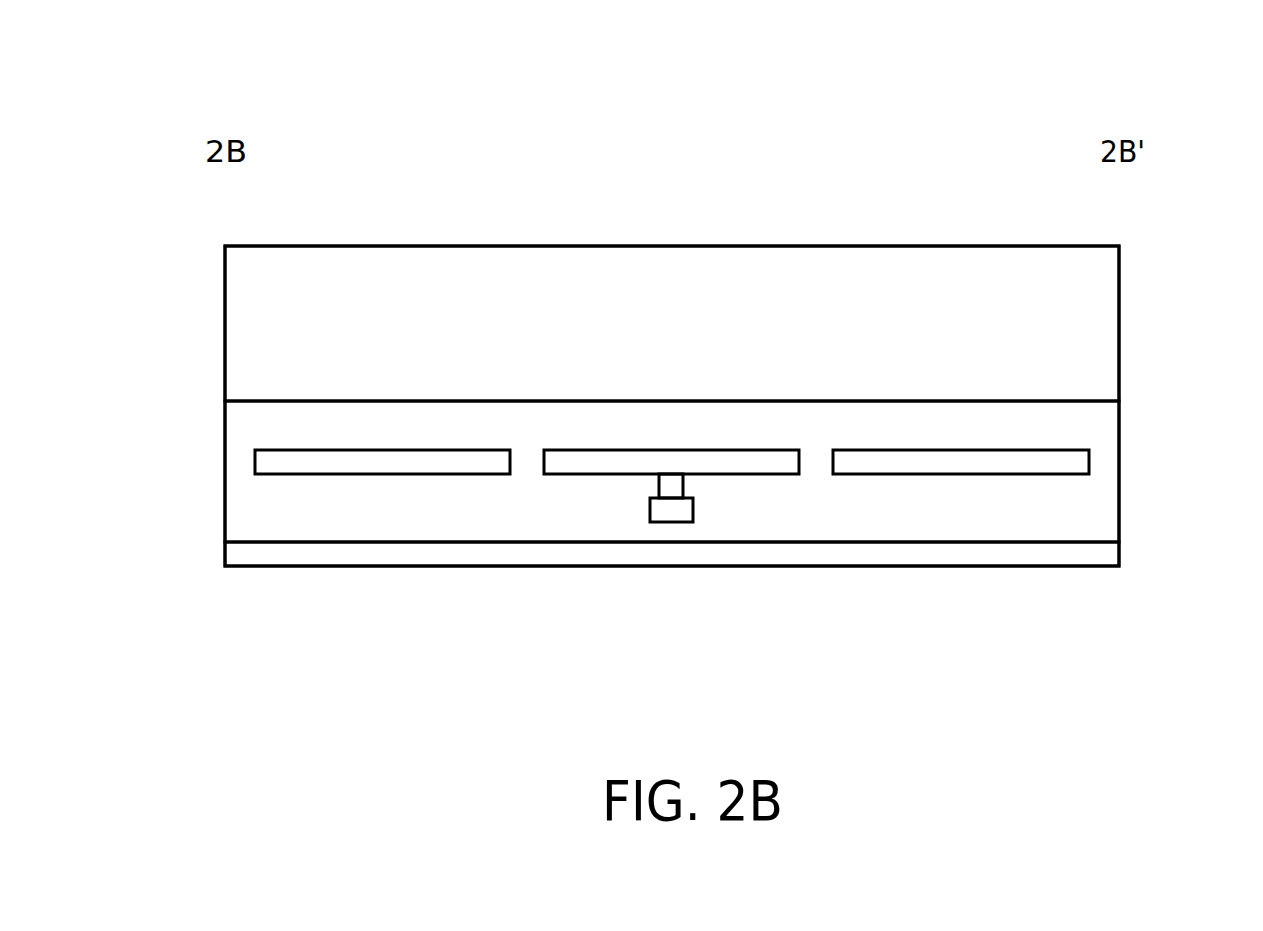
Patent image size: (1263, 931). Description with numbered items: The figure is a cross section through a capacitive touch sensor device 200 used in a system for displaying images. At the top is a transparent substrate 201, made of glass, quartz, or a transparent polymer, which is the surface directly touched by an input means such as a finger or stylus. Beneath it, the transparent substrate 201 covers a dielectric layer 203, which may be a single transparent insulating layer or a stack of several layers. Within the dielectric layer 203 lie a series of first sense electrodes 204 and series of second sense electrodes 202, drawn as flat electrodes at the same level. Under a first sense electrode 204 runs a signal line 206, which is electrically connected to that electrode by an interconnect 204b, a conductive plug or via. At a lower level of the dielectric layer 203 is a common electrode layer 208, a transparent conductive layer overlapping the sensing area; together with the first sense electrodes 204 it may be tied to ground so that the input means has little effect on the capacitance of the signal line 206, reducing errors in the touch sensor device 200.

The capacitive touch sensor device 200 is at (153, 135).
The transparent substrate 201 is at (1098, 287).
The second sense electrodes 202 is at (386, 463).
The dielectric layer 203 is at (1098, 423).
The first sense electrodes 204 is at (671, 462).
The interconnect 204b is at (668, 487).
The signal line 206 is at (673, 510).
The common electrode layer 208 is at (913, 553).